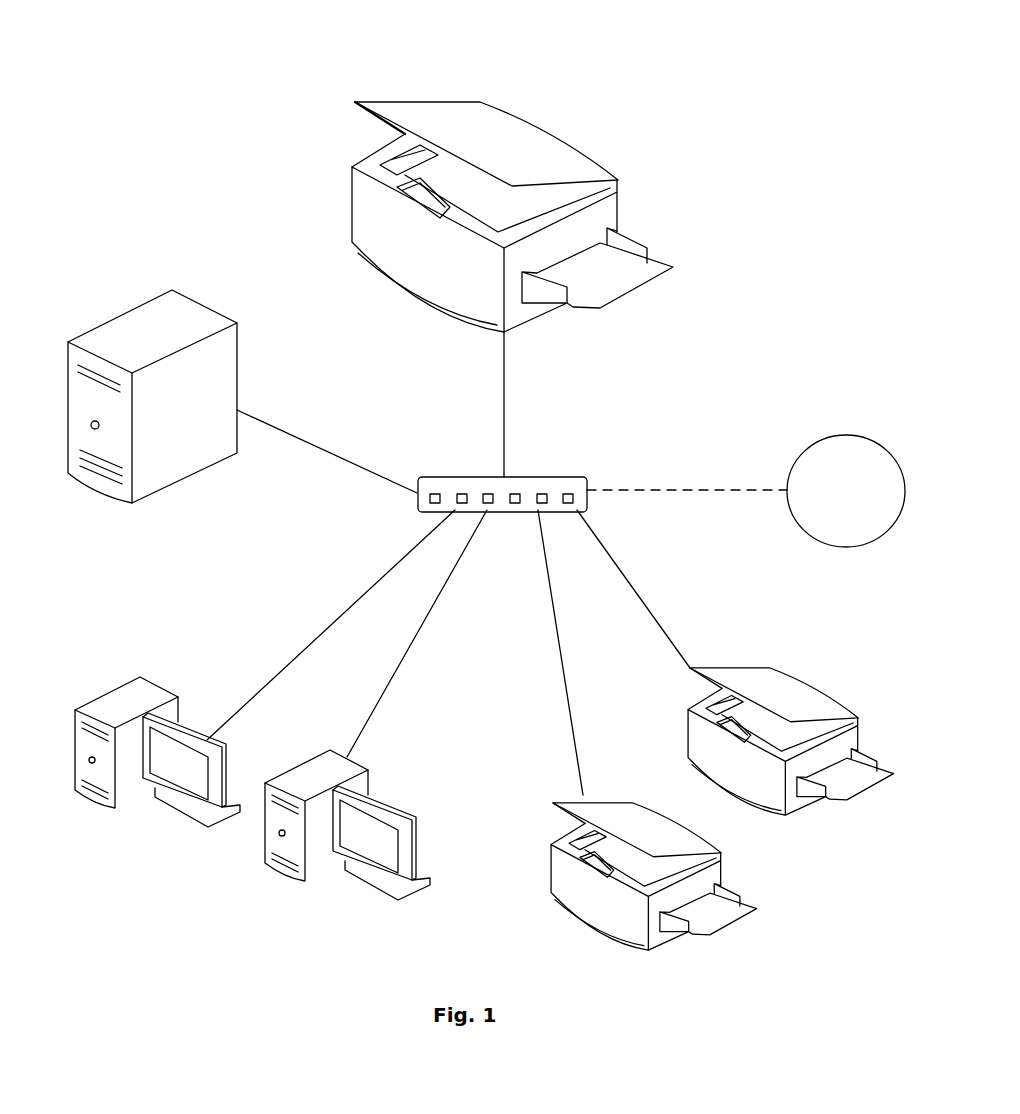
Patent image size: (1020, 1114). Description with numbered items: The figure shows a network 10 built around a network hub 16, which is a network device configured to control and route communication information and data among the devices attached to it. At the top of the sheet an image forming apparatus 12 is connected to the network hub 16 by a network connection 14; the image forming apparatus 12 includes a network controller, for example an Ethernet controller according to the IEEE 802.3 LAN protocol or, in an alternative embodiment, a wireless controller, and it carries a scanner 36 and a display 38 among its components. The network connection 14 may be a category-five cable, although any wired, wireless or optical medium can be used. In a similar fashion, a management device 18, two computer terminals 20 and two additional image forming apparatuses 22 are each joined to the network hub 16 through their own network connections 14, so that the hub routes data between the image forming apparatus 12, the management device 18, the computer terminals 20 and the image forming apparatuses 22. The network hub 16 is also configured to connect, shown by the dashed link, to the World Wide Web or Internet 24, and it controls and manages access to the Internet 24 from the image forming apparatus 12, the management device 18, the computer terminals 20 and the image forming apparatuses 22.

The network 10 is at (222, 95).
The image forming apparatus 12 is at (620, 205).
The network connection 14 is at (505, 390).
The network hub 16 is at (543, 477).
The management device 18 is at (237, 330).
The computer terminals 20 is at (140, 677).
The additional image forming apparatuses 22 is at (770, 668).
The Internet 24 is at (823, 440).
The scanner 36 is at (395, 158).
The display 38 is at (400, 185).